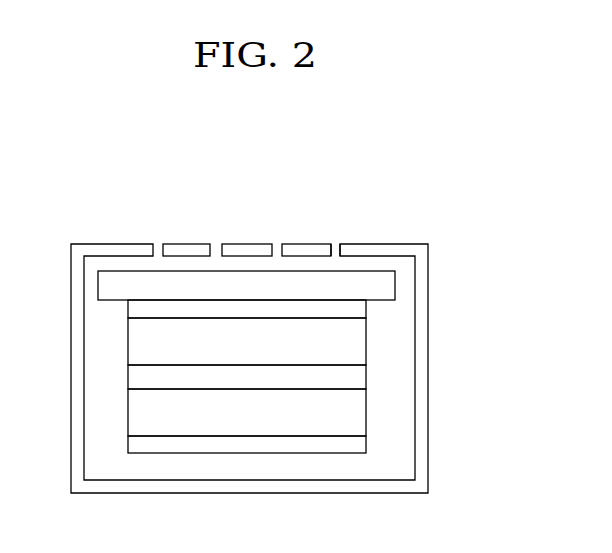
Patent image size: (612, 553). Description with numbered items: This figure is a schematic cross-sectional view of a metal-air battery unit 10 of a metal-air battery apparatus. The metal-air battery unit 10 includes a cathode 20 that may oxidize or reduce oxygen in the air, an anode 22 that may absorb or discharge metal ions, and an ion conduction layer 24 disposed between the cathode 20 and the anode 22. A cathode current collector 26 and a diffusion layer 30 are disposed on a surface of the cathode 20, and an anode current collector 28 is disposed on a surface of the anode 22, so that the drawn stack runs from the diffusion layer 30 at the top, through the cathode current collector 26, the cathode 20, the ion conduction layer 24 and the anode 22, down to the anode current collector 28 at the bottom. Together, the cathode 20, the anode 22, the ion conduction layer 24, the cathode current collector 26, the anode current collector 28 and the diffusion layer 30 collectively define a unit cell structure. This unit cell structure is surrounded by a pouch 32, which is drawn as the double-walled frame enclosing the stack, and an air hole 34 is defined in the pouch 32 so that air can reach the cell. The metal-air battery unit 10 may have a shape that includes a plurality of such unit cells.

The metal-air battery unit 10 is at (413, 202).
The pouch 32 is at (250, 252).
The air hole 34 is at (334, 250).
The diffusion layer 30 is at (387, 283).
The cathode current collector 26 is at (358, 311).
The cathode 20 is at (358, 344).
The ion conduction layer 24 is at (358, 379).
The anode 22 is at (358, 414).
The anode current collector 28 is at (358, 446).